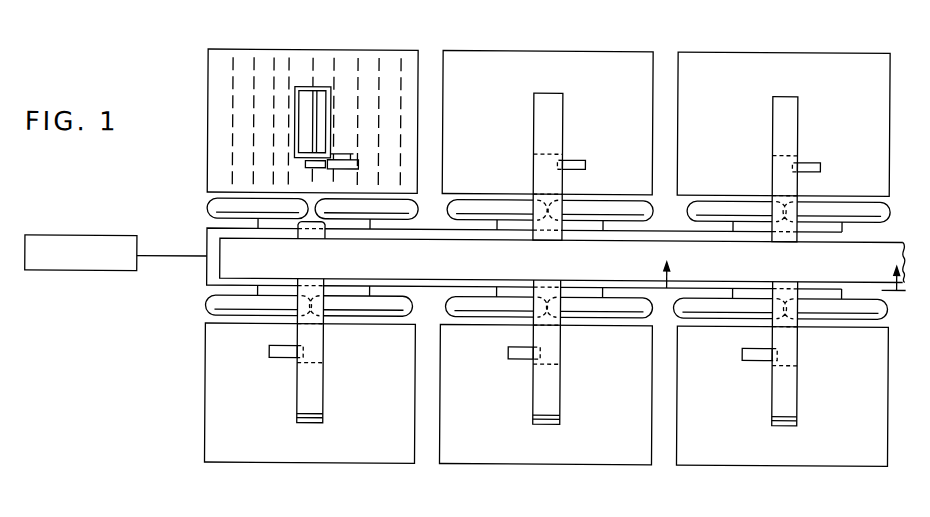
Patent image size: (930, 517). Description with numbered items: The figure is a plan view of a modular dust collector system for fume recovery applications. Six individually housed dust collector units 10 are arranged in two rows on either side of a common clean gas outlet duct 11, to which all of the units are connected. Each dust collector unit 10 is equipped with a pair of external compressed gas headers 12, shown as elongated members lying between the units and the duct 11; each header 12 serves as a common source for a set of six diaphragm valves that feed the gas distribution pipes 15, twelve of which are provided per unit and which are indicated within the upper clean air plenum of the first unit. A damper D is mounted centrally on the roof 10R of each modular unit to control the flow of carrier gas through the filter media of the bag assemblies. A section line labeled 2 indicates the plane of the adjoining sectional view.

The dust collector unit 10 is at (520, 239).
The roof 10R is at (874, 96).
The clean gas outlet duct 11 is at (724, 271).
The compressed gas header 12 is at (207, 205).
The gas distribution pipe 15 is at (265, 125).
The damper D is at (317, 75).
The section line 2- 2 is at (784, 297).